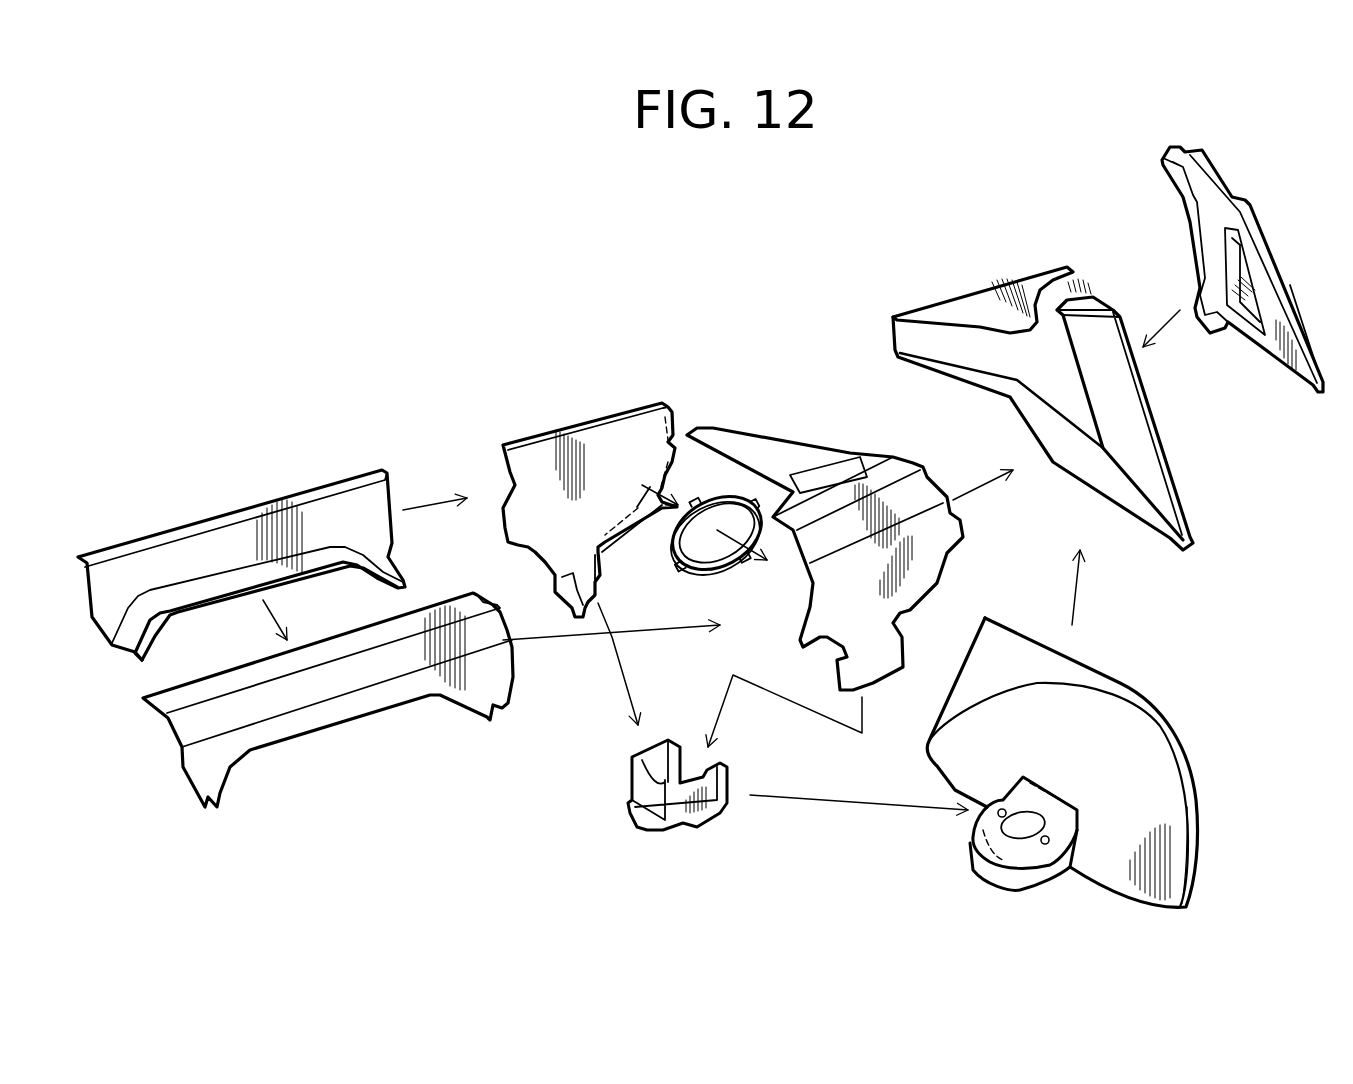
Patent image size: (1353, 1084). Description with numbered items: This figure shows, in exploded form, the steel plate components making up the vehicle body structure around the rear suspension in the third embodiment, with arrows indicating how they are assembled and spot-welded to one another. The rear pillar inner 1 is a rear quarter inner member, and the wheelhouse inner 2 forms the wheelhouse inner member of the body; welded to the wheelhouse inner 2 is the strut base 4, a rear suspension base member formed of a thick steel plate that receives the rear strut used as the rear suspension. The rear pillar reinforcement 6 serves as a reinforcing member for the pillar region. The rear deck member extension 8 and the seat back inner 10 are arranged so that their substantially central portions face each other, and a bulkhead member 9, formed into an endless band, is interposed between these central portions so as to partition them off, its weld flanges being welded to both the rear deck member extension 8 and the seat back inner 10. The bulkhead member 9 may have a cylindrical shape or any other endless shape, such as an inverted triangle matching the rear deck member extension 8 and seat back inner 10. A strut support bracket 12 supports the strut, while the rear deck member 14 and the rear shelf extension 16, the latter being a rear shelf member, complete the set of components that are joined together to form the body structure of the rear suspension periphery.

The rear pillar inner 1 is at (980, 290).
The wheelhouse inner 2 is at (1170, 813).
The strut base 4 is at (1008, 843).
The rear pillar reinforcement 6 is at (1250, 222).
The rear deck member extension 8 is at (597, 440).
The bulkhead member 9 is at (663, 537).
The seat back inner 10 is at (920, 547).
The strut support bracket 12 is at (683, 803).
The rear deck member 14 is at (247, 537).
The rear shelf extension 16 is at (353, 707).